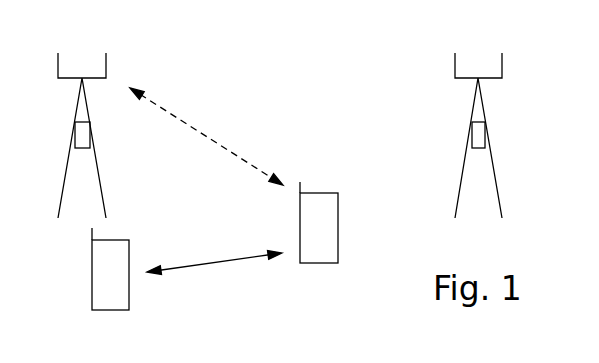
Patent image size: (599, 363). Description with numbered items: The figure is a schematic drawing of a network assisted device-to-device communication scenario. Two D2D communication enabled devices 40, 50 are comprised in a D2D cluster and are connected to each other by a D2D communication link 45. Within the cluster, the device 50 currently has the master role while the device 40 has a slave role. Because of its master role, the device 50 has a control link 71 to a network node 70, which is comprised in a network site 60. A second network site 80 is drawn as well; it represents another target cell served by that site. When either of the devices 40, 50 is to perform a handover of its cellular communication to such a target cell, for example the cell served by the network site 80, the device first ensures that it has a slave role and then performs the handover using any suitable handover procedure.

The D2D communication enabled device 40 is at (110, 269).
The D2D communication link 45 is at (213, 263).
The D2D communication enabled device 50 is at (319, 222).
The network site 60 is at (102, 185).
The network node 70 is at (82, 137).
The control link 71 is at (225, 148).
The network site 80 is at (497, 185).